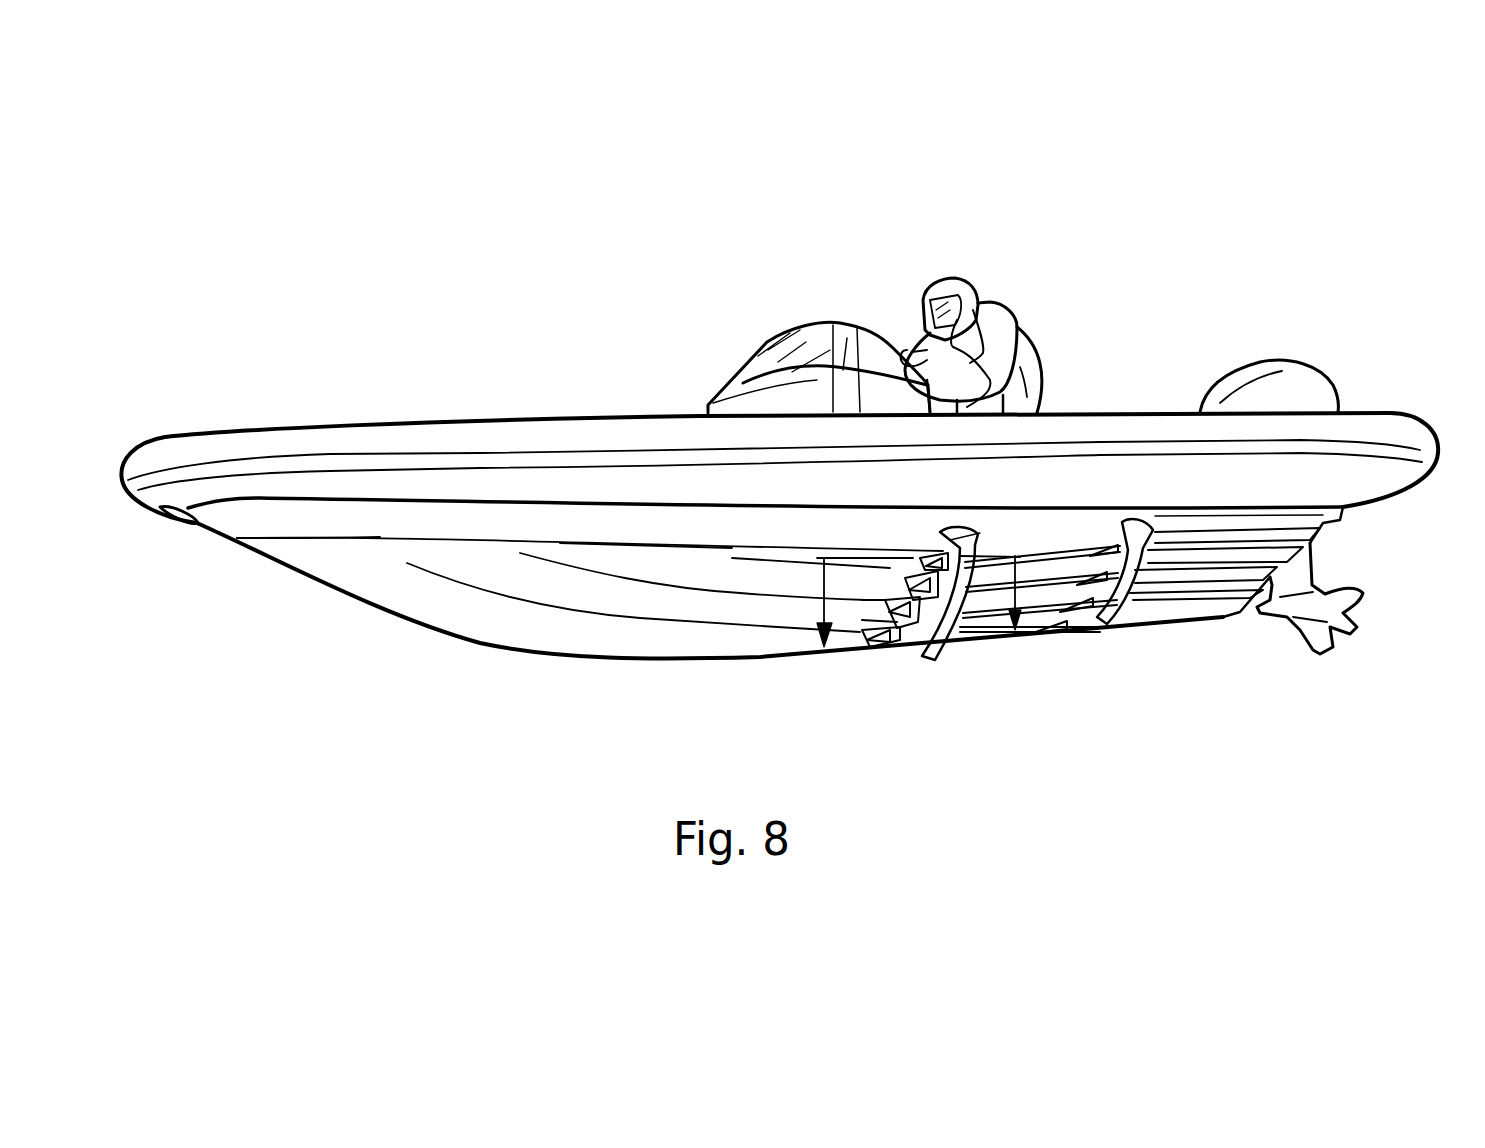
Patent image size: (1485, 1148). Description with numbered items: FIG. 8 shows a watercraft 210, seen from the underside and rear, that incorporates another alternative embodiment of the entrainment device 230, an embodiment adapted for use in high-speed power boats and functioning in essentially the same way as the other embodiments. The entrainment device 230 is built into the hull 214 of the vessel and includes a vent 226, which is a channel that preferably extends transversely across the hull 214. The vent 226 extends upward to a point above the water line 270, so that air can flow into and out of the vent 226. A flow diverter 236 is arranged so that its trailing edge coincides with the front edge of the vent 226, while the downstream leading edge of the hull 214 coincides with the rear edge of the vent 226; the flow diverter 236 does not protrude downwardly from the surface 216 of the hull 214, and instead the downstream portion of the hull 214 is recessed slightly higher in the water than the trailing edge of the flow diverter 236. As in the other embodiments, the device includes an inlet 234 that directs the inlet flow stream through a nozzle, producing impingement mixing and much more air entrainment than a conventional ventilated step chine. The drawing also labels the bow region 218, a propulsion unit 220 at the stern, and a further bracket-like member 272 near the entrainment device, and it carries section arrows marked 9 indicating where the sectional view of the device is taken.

The watercraft 210 is at (736, 216).
The hull 214 is at (490, 563).
The surface of the hull 216 is at (712, 581).
The bow 218 is at (303, 552).
The propulsion unit 220 is at (1258, 548).
The vent 226 is at (967, 547).
The entrainment device 230 is at (963, 560).
The inlet 234 is at (880, 634).
The flow diverter 236 is at (940, 548).
The water line 270 is at (577, 545).
The bracket 272 is at (968, 537).
The section line 9- 9 is at (919, 617).